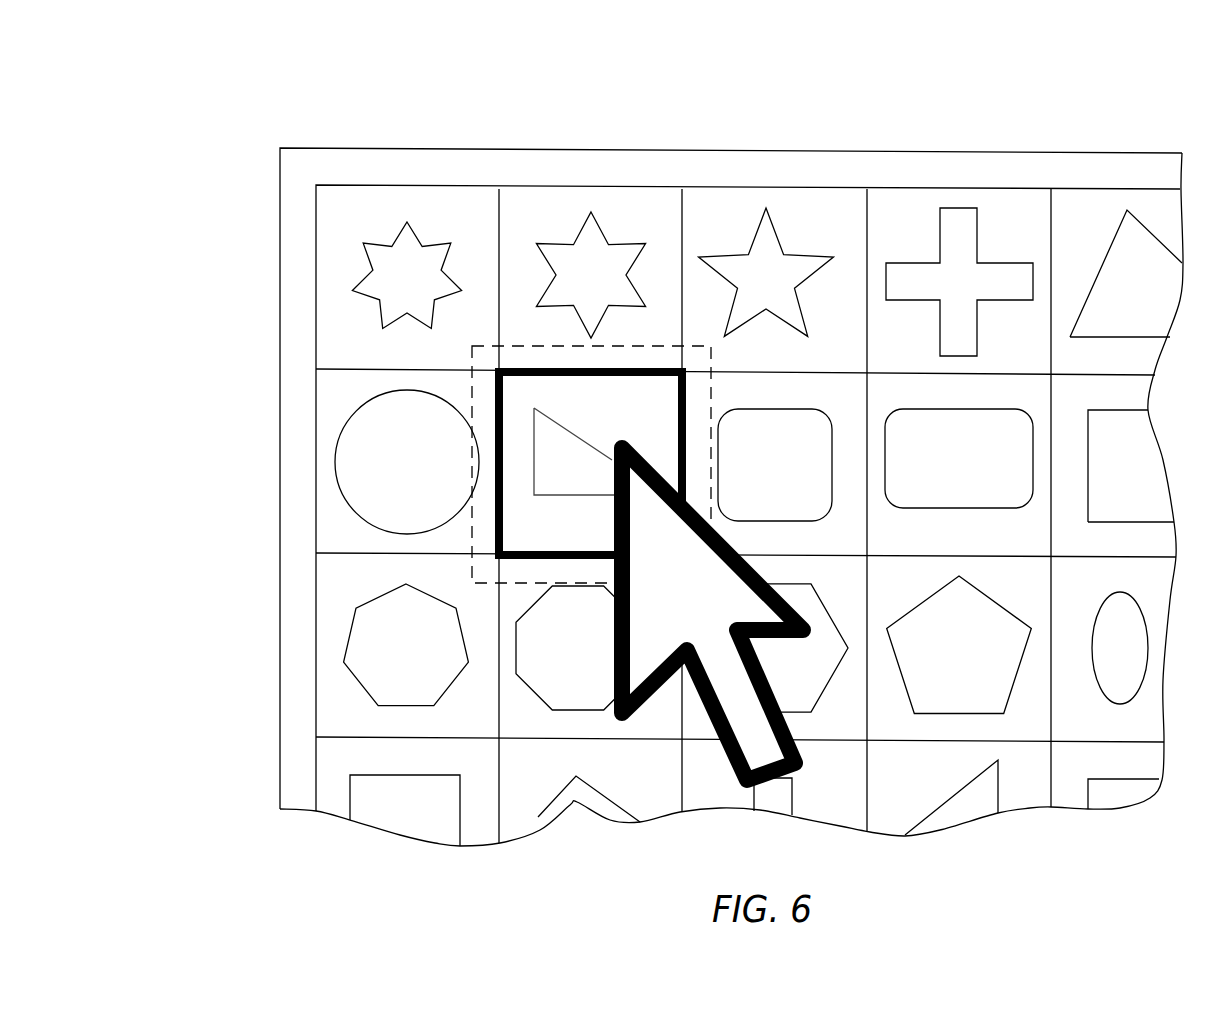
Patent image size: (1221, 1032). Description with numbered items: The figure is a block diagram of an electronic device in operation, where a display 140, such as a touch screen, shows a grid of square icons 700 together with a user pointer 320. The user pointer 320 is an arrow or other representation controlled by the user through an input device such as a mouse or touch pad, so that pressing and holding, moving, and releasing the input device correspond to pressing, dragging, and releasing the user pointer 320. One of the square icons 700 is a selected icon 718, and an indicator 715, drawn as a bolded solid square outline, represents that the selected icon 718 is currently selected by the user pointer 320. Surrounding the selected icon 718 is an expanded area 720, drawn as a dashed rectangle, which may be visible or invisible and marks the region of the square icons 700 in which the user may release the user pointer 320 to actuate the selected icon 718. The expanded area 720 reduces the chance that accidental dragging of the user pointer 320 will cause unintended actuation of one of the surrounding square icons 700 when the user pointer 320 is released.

The display 140 is at (865, 152).
The square icons 700 is at (360, 185).
The indicator 715 is at (517, 372).
The selected icon 718 is at (590, 400).
The expanded area 720 is at (472, 385).
The user pointer 320 is at (609, 645).